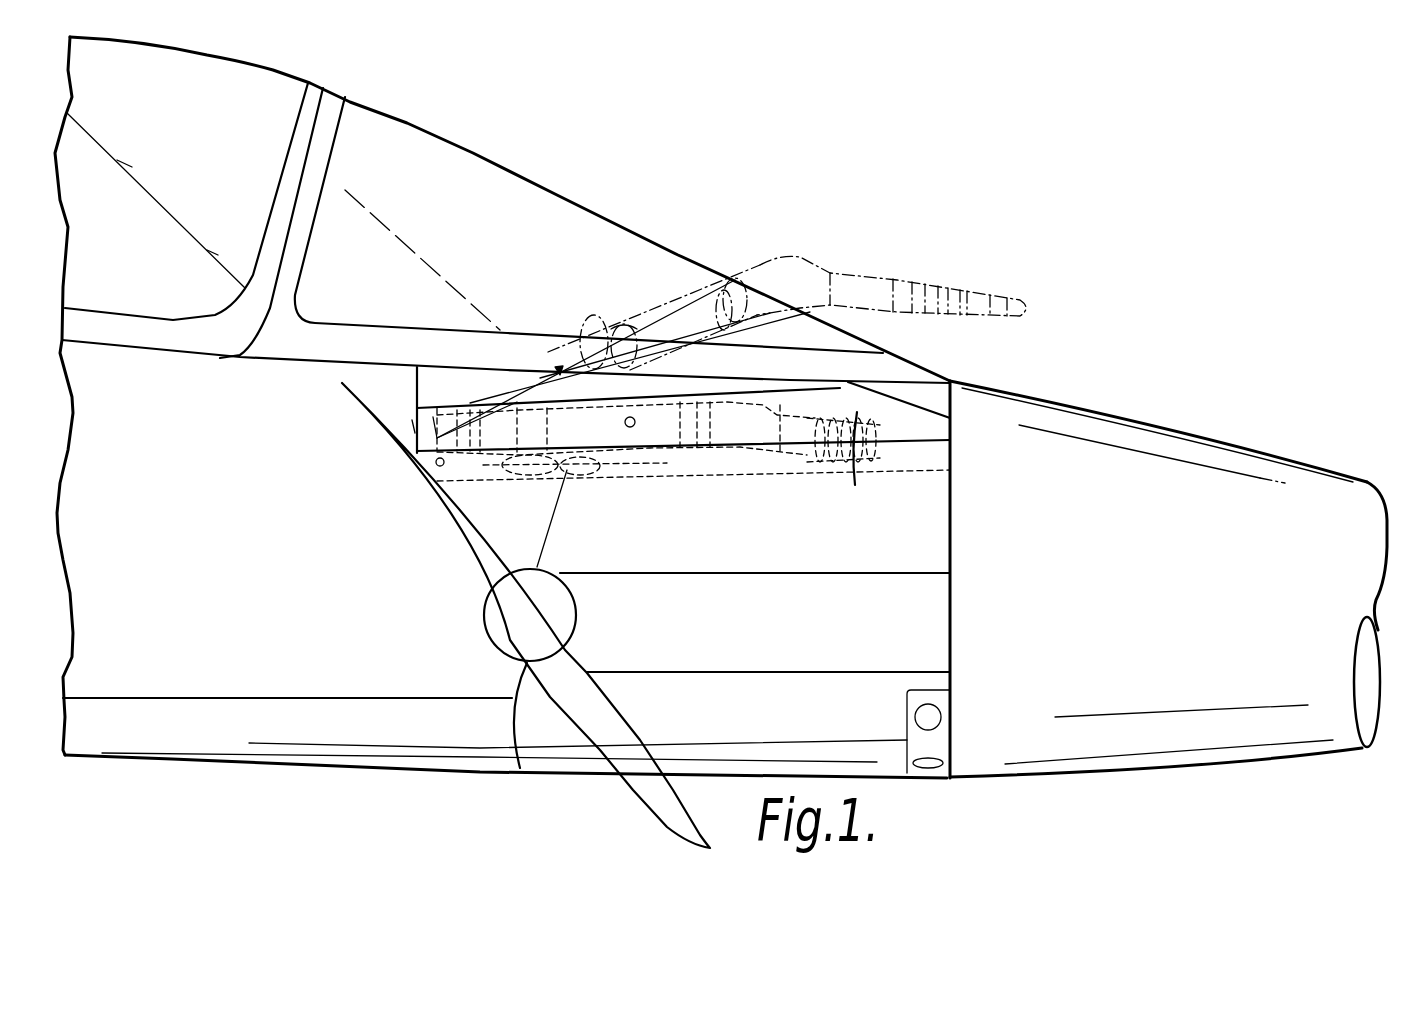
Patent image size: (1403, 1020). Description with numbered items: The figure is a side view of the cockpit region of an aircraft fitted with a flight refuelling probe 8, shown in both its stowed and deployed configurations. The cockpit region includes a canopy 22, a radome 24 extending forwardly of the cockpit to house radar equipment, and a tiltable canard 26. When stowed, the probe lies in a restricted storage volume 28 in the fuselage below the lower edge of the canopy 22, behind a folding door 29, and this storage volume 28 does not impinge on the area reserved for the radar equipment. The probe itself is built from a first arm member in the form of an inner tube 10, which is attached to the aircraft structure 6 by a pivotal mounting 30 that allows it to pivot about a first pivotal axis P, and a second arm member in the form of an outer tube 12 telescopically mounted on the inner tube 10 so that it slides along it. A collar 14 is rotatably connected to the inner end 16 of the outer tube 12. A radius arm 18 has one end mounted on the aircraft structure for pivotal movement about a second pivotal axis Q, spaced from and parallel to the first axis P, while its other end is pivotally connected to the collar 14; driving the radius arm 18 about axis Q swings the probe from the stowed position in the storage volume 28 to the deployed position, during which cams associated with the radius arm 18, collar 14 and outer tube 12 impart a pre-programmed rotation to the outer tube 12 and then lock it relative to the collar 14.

The aircraft structure 6 is at (372, 588).
The flight refuelling probe 8 is at (826, 245).
The inner tube 10 is at (518, 382).
The outer tube 12 is at (676, 303).
The collar 14 is at (600, 332).
The inner end of the outer tube 16 is at (630, 338).
The radius arm 18 is at (595, 470).
The canopy 22 is at (510, 176).
The radome 24 is at (1266, 481).
The tiltable canard 26 is at (660, 815).
The storage volume 28 is at (893, 448).
The folding door 29 is at (853, 464).
The pivotal mounting 30 is at (412, 427).
The first pivotal axis P is at (437, 466).
The second pivotal axis Q is at (632, 428).